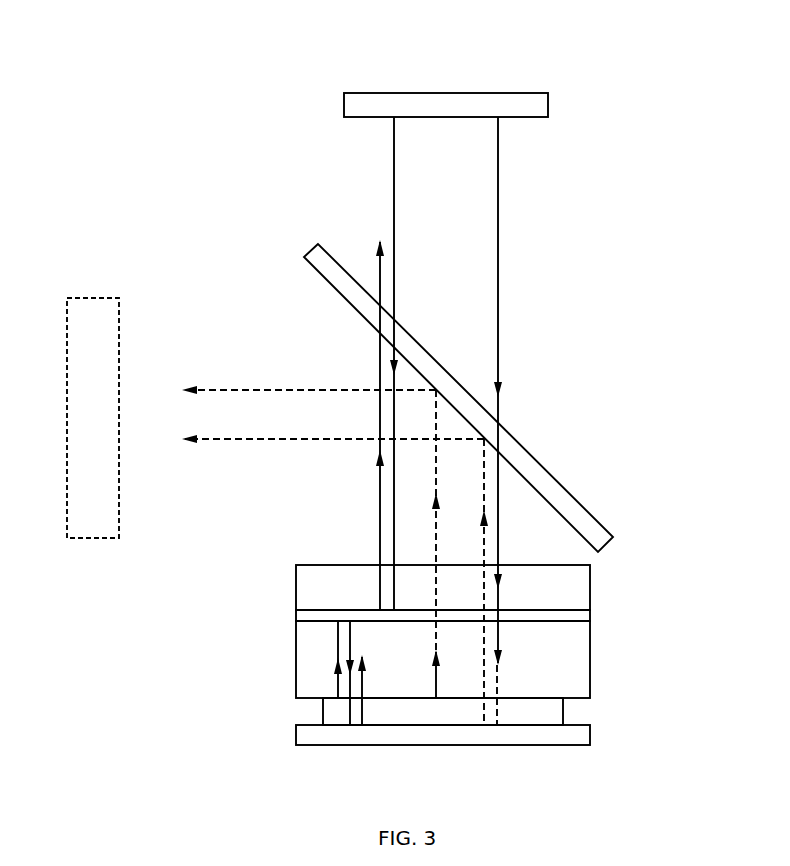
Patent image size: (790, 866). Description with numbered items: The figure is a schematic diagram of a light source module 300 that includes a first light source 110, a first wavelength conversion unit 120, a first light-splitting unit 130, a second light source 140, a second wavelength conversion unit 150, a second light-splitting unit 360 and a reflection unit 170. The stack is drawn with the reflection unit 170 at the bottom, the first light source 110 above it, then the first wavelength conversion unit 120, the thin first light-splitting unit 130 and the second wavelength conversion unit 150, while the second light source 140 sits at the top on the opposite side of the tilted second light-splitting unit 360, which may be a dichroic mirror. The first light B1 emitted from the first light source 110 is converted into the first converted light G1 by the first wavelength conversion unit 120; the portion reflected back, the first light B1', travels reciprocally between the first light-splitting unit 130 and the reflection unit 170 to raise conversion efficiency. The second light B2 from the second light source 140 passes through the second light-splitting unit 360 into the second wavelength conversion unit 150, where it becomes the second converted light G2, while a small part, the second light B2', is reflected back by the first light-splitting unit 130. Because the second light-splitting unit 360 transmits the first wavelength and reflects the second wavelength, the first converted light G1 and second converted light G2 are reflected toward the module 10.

The light source module 300 is at (256, 53).
The second light source 140 is at (532, 104).
The second light-splitting unit 360 is at (595, 538).
The second wavelength conversion unit 150 is at (583, 594).
The first light-splitting unit 130 is at (583, 619).
The first wavelength conversion unit 120 is at (583, 657).
The first light source 110 is at (545, 710).
The reflection unit 170 is at (565, 738).
The module 10 is at (90, 538).
The first light B1 is at (388, 673).
The reflected first light B1' is at (383, 680).
The second light B2 is at (423, 391).
The reflected second light B2' is at (350, 425).
The first converted light G1 is at (457, 532).
The second converted light G2 is at (527, 668).